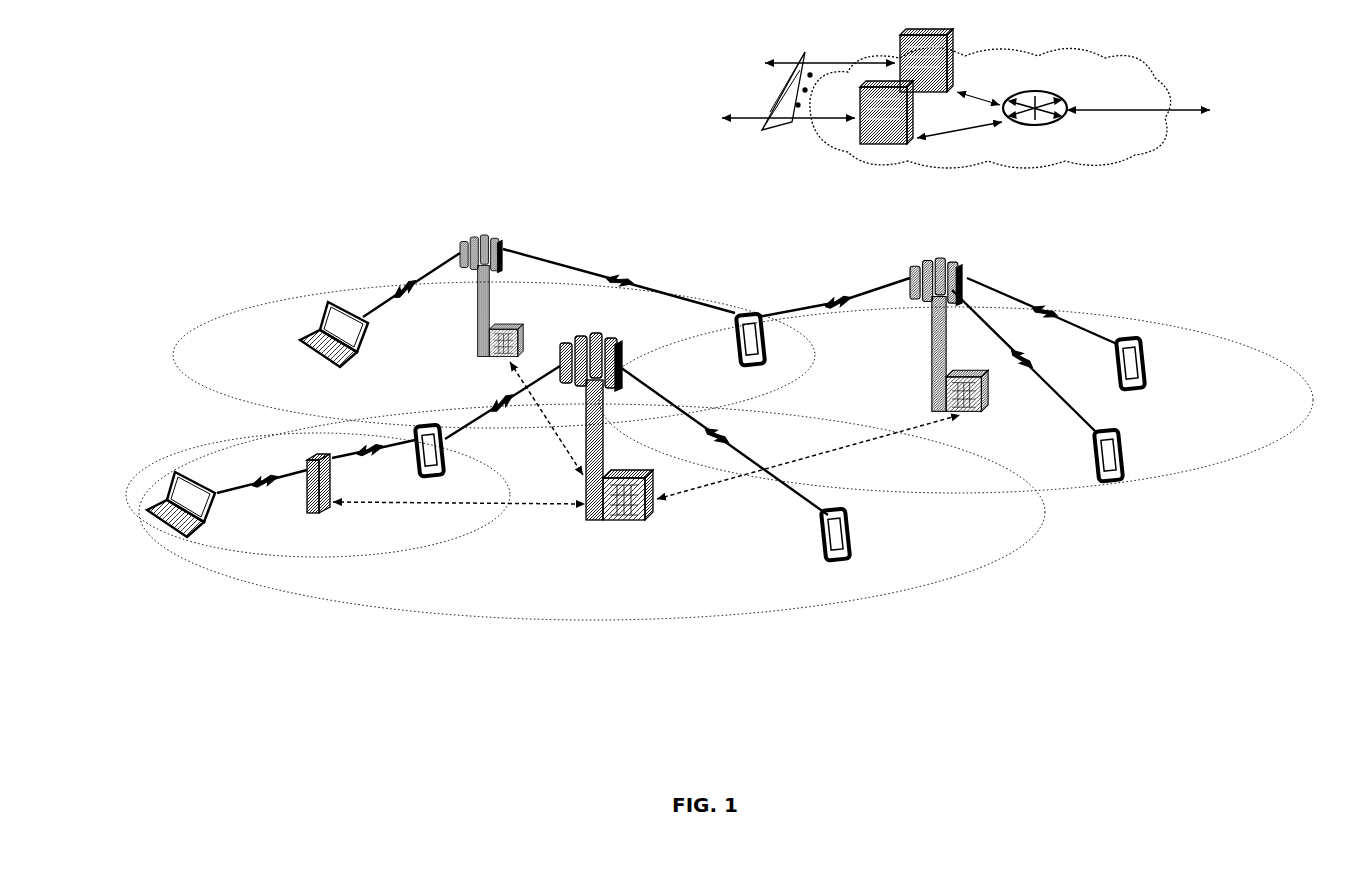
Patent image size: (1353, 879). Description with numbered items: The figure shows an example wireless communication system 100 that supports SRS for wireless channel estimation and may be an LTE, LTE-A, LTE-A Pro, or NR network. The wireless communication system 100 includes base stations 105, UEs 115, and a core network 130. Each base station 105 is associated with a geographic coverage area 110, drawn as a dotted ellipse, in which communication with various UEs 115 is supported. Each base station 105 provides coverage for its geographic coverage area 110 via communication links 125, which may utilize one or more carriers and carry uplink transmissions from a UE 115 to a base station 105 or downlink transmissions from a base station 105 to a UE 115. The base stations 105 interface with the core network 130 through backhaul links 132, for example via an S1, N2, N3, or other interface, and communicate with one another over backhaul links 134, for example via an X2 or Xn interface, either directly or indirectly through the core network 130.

The wireless communication system 100 is at (1158, 662).
The base station 105 is at (480, 342).
The geographic coverage area 110 is at (198, 395).
The UE 115 is at (313, 368).
The communication link 125 is at (405, 278).
The core network 130 is at (990, 160).
The backhaul link 132 is at (760, 128).
The backhaul link 134 is at (538, 412).